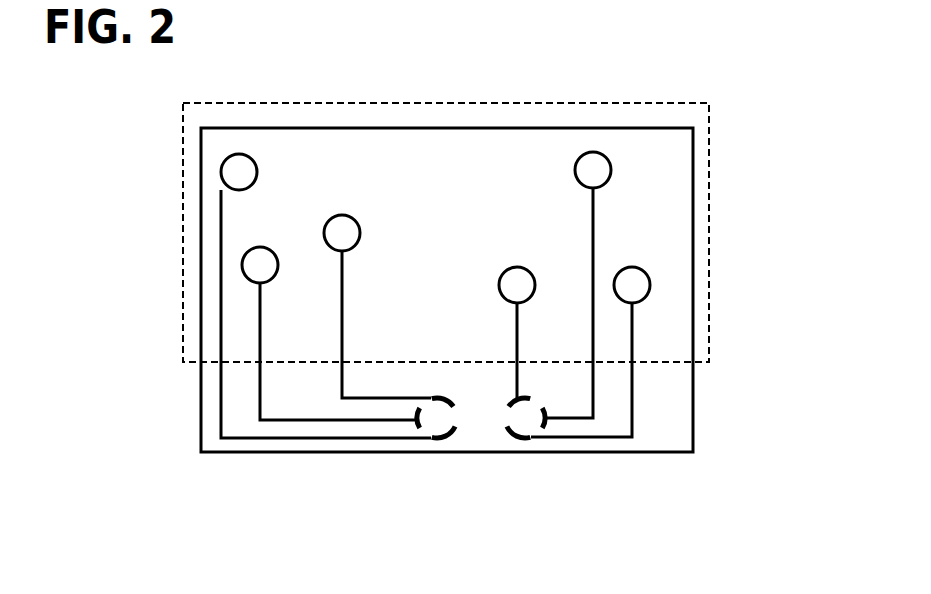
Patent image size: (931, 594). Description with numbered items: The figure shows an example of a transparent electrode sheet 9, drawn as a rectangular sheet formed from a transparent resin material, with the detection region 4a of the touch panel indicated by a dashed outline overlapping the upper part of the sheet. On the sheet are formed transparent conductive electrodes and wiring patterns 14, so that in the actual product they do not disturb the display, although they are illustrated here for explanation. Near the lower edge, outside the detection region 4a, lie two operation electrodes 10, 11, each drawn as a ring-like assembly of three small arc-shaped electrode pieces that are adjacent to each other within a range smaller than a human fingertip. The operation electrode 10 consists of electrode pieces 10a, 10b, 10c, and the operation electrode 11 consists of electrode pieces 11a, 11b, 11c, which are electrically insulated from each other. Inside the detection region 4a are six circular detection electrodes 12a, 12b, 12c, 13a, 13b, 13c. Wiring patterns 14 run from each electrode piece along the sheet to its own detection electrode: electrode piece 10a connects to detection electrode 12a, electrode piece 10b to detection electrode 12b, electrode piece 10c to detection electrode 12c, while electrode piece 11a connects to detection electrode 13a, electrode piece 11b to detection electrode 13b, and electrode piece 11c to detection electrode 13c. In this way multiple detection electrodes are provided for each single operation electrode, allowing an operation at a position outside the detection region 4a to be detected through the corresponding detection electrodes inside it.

The detection region 4a is at (709, 201).
The transparent electrode sheet 9 is at (693, 404).
The operation electrode 10 is at (449, 445).
The electrode piece 10a is at (455, 437).
The electrode piece 10b is at (412, 430).
The electrode piece 10c is at (447, 397).
The operation electrode 11 is at (543, 452).
The electrode piece 11a is at (522, 395).
The electrode piece 11b is at (545, 427).
The electrode piece 11c is at (508, 438).
The detection electrode 12a is at (257, 172).
The detection electrode 12b is at (278, 263).
The detection electrode 12c is at (360, 233).
The detection electrode 13a is at (535, 285).
The detection electrode 13b is at (611, 170).
The detection electrode 13c is at (650, 285).
The wiring pattern 14 is at (221, 204).